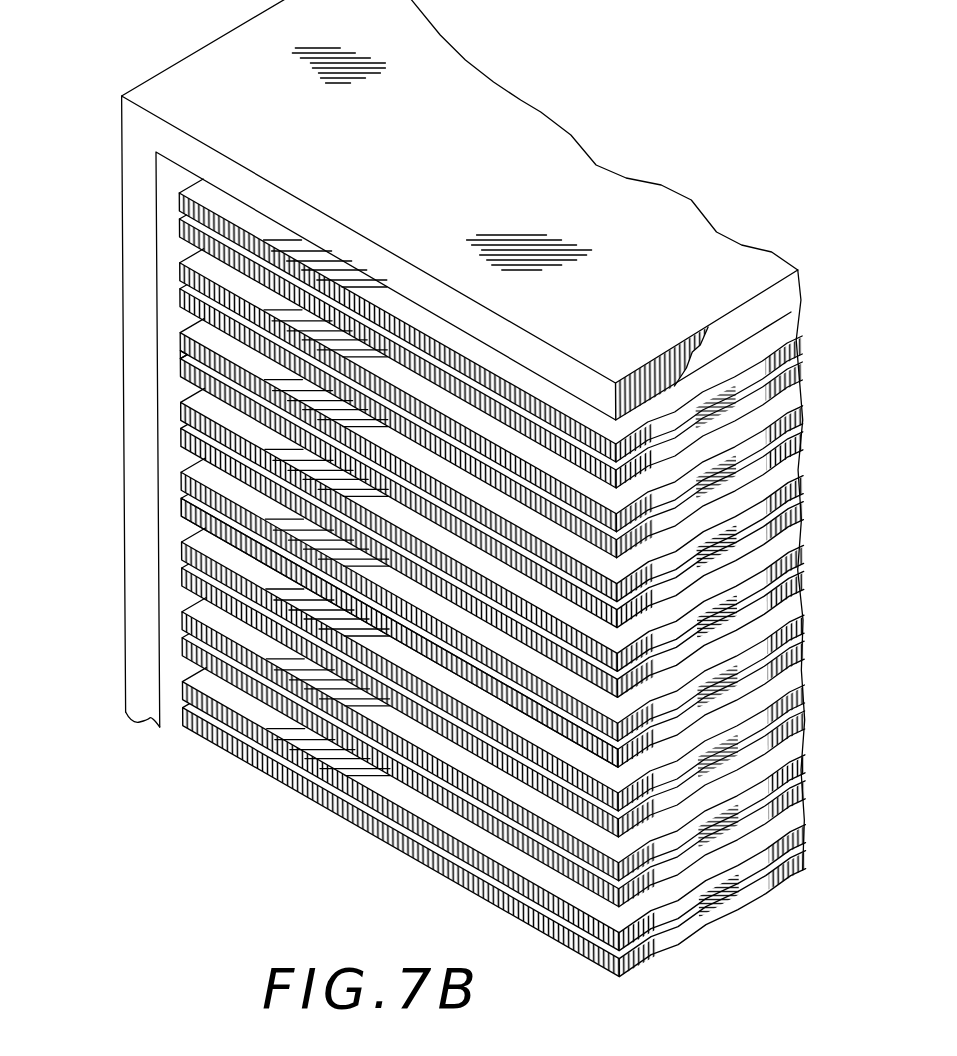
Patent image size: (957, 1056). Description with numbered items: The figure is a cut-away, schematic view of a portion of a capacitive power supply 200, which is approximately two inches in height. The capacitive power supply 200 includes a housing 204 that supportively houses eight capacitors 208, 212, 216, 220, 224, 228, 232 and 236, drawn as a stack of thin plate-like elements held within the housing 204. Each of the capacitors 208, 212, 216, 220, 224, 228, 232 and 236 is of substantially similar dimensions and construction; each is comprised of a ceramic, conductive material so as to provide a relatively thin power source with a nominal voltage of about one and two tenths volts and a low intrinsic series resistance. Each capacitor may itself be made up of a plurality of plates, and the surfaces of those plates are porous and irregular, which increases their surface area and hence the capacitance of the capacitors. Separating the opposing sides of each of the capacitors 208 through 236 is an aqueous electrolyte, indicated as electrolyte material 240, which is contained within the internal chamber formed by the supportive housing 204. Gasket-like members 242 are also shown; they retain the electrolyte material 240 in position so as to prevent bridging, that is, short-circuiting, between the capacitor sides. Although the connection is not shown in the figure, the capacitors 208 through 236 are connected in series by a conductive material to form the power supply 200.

The capacitive power supply 200 is at (148, 42).
The housing 204 is at (155, 495).
The capacitor 208 is at (803, 347).
The capacitor 212 is at (804, 422).
The capacitor 216 is at (804, 492).
The capacitor 220 is at (804, 563).
The capacitor 224 is at (804, 633).
The capacitor 228 is at (806, 705).
The capacitor 232 is at (806, 773).
The capacitor 236 is at (808, 845).
The electrolyte material 240 is at (205, 502).
The gasket-like members 242 is at (180, 351).